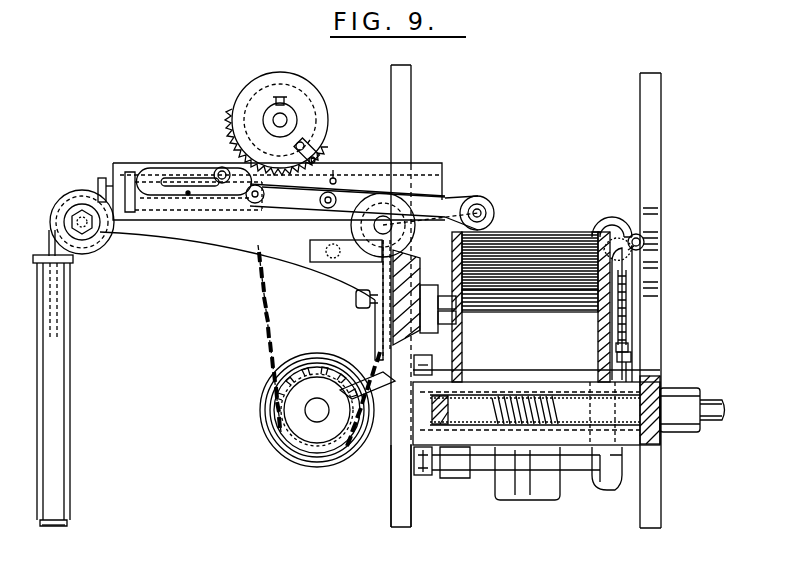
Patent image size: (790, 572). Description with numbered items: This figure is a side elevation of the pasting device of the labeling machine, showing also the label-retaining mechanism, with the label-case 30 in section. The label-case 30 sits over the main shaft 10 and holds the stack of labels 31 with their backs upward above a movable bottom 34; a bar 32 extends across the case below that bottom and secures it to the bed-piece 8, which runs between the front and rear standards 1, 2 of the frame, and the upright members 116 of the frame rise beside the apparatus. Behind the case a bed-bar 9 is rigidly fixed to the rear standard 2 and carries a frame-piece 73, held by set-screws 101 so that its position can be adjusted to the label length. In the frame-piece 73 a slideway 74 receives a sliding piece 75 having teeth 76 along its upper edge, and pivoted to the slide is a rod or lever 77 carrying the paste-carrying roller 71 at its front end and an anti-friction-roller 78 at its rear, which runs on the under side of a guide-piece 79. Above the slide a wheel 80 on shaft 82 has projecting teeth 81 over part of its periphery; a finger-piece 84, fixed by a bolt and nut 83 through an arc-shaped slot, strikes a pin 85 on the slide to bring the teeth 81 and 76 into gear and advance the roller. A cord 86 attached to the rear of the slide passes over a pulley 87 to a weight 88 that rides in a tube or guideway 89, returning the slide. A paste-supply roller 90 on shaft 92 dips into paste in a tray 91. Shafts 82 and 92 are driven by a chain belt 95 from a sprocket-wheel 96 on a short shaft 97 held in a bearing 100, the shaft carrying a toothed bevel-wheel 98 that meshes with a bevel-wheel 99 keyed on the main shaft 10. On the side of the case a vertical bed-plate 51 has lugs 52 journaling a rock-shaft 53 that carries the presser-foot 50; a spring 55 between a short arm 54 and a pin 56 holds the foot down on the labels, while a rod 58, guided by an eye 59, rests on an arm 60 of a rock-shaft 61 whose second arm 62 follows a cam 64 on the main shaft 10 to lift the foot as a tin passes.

The front standard 1 is at (652, 498).
The rear standard 2 is at (395, 500).
The bed-piece 8 is at (536, 386).
The bed-bar 9 is at (408, 292).
The main shaft 10 is at (710, 406).
The label-case 30 is at (598, 335).
The labels 31 is at (538, 238).
The bar 32 is at (505, 368).
The movable bottom 34 is at (528, 305).
The presser-foot 50 is at (608, 216).
The bed-plate 51 is at (616, 318).
The lugs 52 is at (640, 236).
The rock-shaft 53 is at (660, 243).
The short arm 54 is at (630, 258).
The spring 55 is at (628, 326).
The pin 56 is at (628, 348).
The rod 58 is at (628, 372).
The eye 59 is at (632, 358).
The arm 60 is at (608, 490).
The rock-shaft 61 is at (584, 472).
The second arm 62 is at (424, 476).
The cam 64 is at (425, 366).
The paste-carrying roller 71 is at (488, 212).
The frame-piece 73 is at (118, 170).
The slideway 74 is at (395, 177).
The sliding piece 75 is at (195, 206).
The teeth 76 is at (341, 166).
The rod or lever 77 is at (347, 200).
The anti-friction-roller 78 is at (252, 204).
The guide-piece 79 is at (190, 170).
The wheel 80 is at (272, 82).
The projecting teeth 81 is at (232, 116).
The shaft 82 is at (282, 118).
The bolt and nut 83 is at (306, 143).
The finger-piece 84 is at (318, 158).
The pin 85 is at (400, 205).
The cord 86 is at (100, 182).
The pulley 87 is at (60, 206).
The weight 88 is at (54, 526).
The tube or guideway 89 is at (52, 370).
The paste-supply roller 90 is at (386, 226).
The tray 91 is at (337, 252).
The shaft 92 is at (402, 214).
The chain belt 95 is at (268, 312).
The sprocket-wheel 96 is at (314, 432).
The short shaft 97 is at (300, 412).
The toothed bevel-wheel 98 is at (270, 394).
The bevel-wheel 99 is at (358, 452).
The bearing 100 is at (352, 385).
The set-screws 101 is at (362, 303).
The post 116 is at (405, 88).